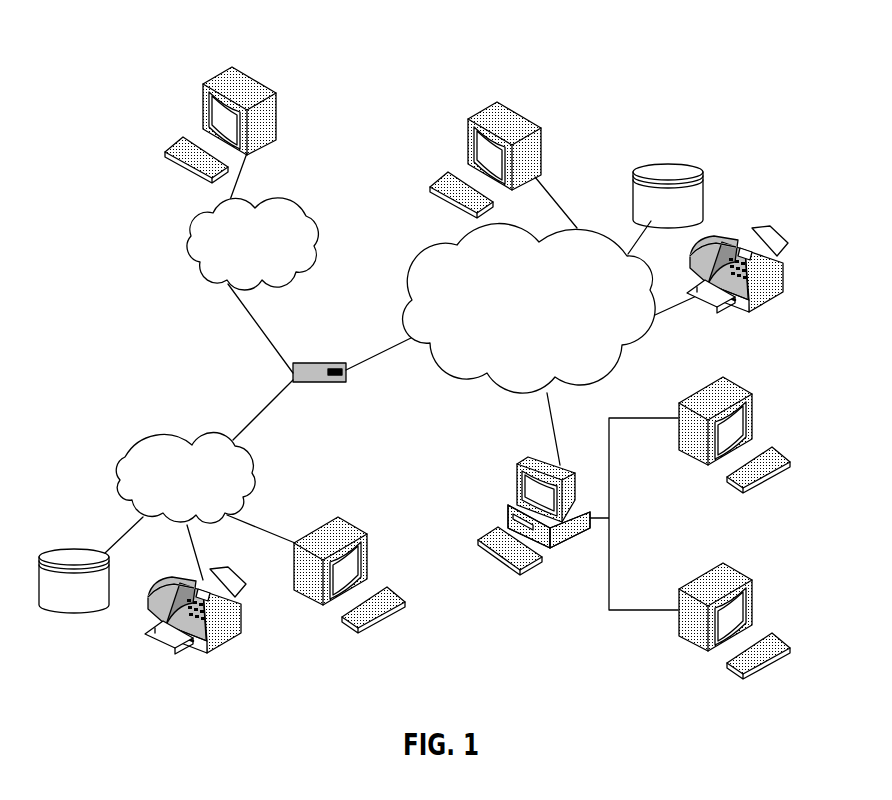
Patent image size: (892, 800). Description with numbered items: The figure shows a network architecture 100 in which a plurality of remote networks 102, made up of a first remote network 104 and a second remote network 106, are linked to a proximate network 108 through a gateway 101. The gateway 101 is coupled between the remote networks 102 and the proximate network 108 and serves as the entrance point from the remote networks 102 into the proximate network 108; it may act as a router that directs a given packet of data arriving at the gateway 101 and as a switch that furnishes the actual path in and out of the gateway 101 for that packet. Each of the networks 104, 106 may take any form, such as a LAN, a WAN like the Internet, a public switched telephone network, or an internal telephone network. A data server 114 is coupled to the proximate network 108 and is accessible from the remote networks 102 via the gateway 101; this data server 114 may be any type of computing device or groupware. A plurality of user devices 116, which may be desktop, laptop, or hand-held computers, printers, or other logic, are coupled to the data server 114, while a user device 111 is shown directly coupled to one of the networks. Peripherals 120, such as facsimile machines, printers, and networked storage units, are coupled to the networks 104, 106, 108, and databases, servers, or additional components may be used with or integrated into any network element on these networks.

The network architecture 100 is at (145, 51).
The gateway 101 is at (305, 363).
The remote networks 102 is at (168, 296).
The first remote network 104 is at (125, 457).
The second remote network 106 is at (313, 220).
The proximate network 108 is at (620, 366).
The user device 111 is at (542, 131).
The data server 114 is at (518, 477).
The user devices 116 is at (277, 103).
The peripheral 120 is at (703, 175).